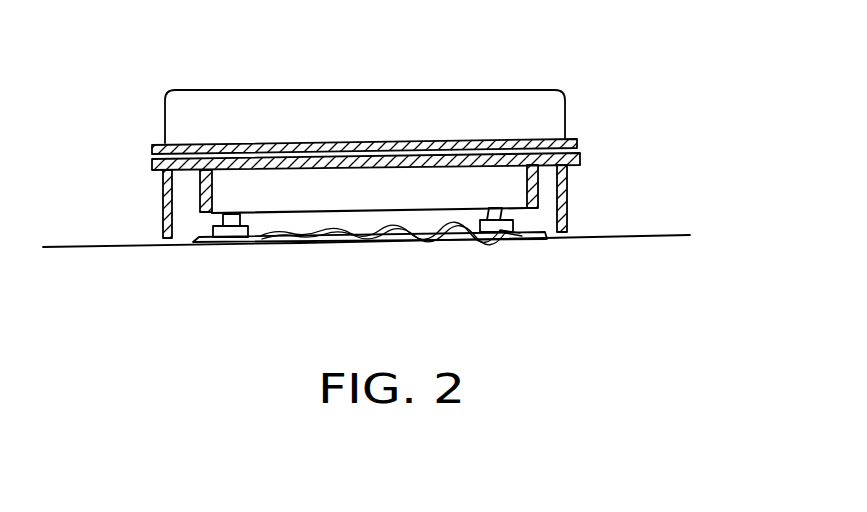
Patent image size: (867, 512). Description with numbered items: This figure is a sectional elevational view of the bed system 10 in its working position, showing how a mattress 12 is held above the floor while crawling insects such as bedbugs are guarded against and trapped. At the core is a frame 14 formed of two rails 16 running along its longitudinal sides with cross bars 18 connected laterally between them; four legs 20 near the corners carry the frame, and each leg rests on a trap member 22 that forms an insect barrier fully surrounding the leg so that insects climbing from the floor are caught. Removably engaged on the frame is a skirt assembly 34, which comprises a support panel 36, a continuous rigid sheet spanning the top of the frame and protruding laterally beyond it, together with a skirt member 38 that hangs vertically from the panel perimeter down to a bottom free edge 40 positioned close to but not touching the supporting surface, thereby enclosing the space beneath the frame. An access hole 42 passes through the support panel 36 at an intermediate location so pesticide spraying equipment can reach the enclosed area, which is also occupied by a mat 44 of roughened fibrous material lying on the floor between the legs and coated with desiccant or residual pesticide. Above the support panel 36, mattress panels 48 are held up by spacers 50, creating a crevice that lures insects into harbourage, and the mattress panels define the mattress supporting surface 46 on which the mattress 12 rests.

The bed system 10 is at (666, 178).
The mattress 12 is at (432, 100).
The frame 14 is at (388, 218).
The rails 16 is at (200, 188).
The cross bars 18 is at (313, 193).
The legs 20 is at (222, 216).
The trap members 22 is at (227, 246).
The skirt assembly 34 is at (576, 193).
The support panel 36 is at (581, 158).
The skirt member 38 is at (567, 213).
The bottom free edge 40 is at (567, 232).
The access hole 42 is at (373, 166).
The mat of fibrous material 44 is at (343, 243).
The mattress supporting surface 46 is at (569, 134).
The mattress panels 48 is at (272, 145).
The spacers 50 is at (148, 159).